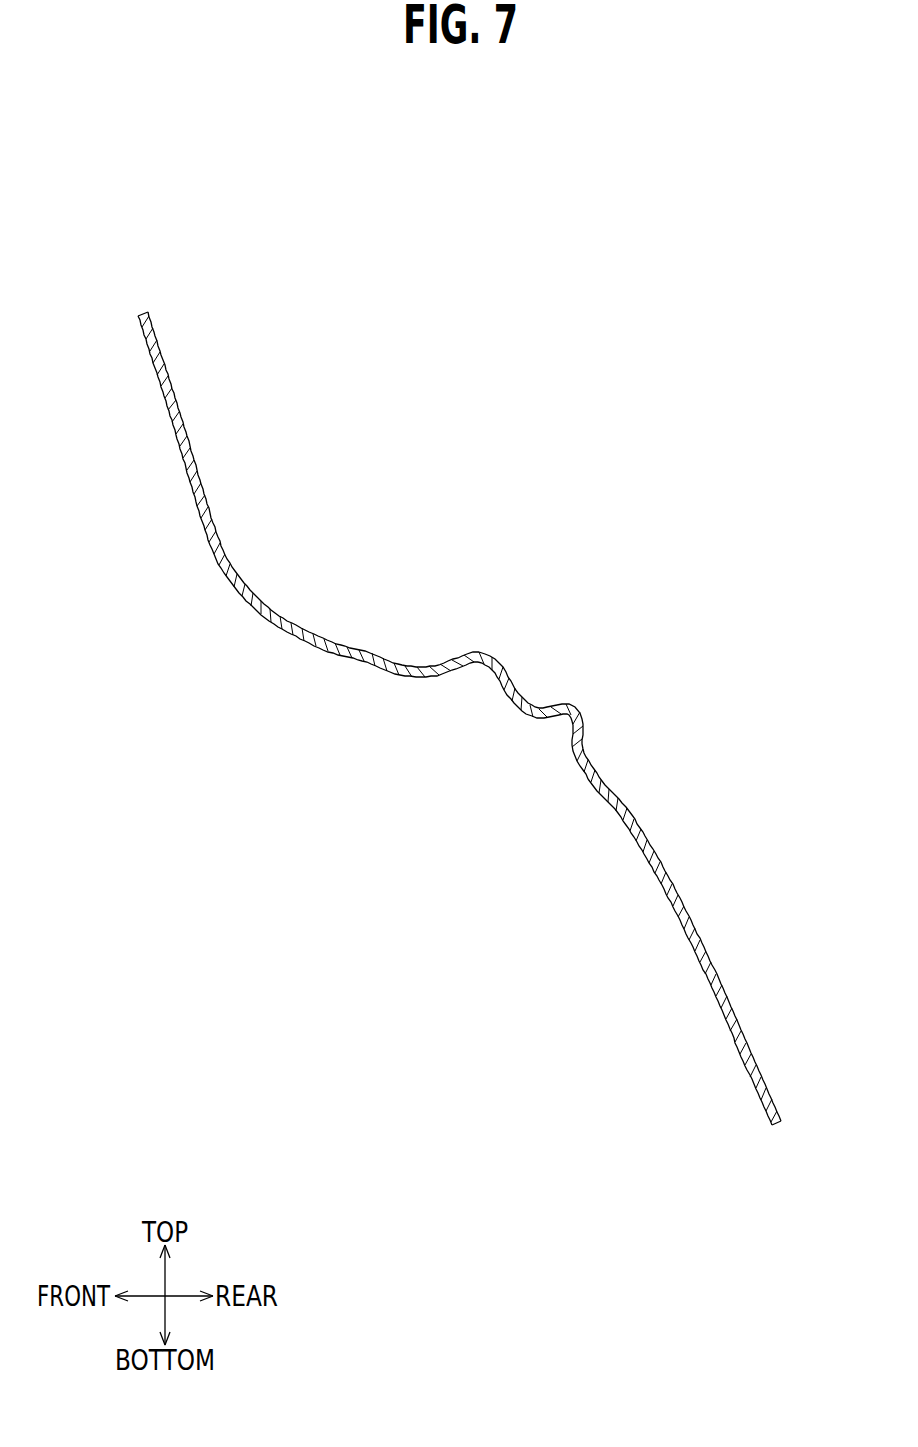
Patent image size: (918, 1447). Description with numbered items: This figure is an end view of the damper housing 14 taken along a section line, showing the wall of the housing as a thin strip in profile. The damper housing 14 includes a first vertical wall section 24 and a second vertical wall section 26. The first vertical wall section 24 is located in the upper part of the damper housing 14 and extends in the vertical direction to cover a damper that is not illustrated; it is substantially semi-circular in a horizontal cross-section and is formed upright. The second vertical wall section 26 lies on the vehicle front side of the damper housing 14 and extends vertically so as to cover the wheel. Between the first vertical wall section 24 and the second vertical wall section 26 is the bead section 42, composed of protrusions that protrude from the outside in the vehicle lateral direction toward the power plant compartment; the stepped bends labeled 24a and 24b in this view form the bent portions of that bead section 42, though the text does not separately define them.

The damper housing 14 is at (460, 718).
The first vertical wall section 24 is at (187, 381).
The first bent portion 24a is at (490, 653).
The second bent portion 24b is at (597, 709).
The bead section 42 is at (564, 676).
The second vertical wall section 26 is at (710, 923).